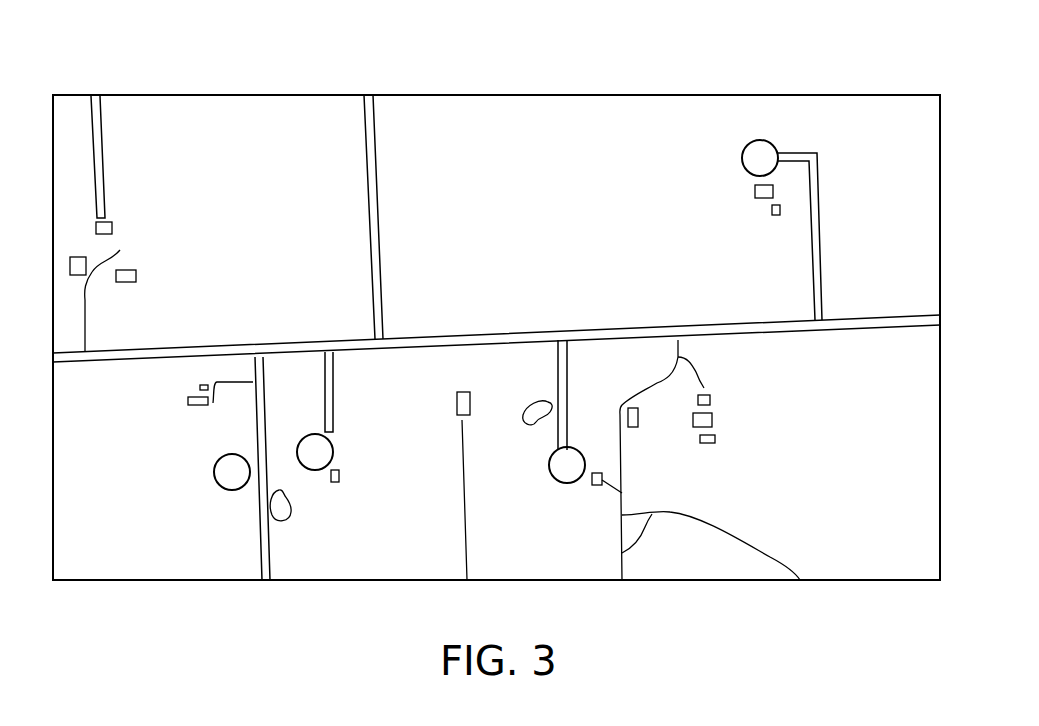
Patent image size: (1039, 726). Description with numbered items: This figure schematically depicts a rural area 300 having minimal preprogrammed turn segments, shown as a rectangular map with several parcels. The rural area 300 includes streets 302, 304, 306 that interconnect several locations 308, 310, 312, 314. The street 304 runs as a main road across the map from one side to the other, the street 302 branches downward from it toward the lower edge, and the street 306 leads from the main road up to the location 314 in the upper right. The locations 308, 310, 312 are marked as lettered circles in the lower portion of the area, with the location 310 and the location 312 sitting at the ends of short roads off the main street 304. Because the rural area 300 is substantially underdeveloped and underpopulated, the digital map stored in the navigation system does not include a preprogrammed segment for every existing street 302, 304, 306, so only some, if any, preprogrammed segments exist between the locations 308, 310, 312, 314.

The rural area 300 is at (100, 82).
The street 302 is at (260, 528).
The street 304 is at (188, 352).
The street 306 is at (818, 237).
The location 308 is at (213, 470).
The location 310 is at (316, 470).
The location 312 is at (566, 483).
The location 314 is at (742, 158).